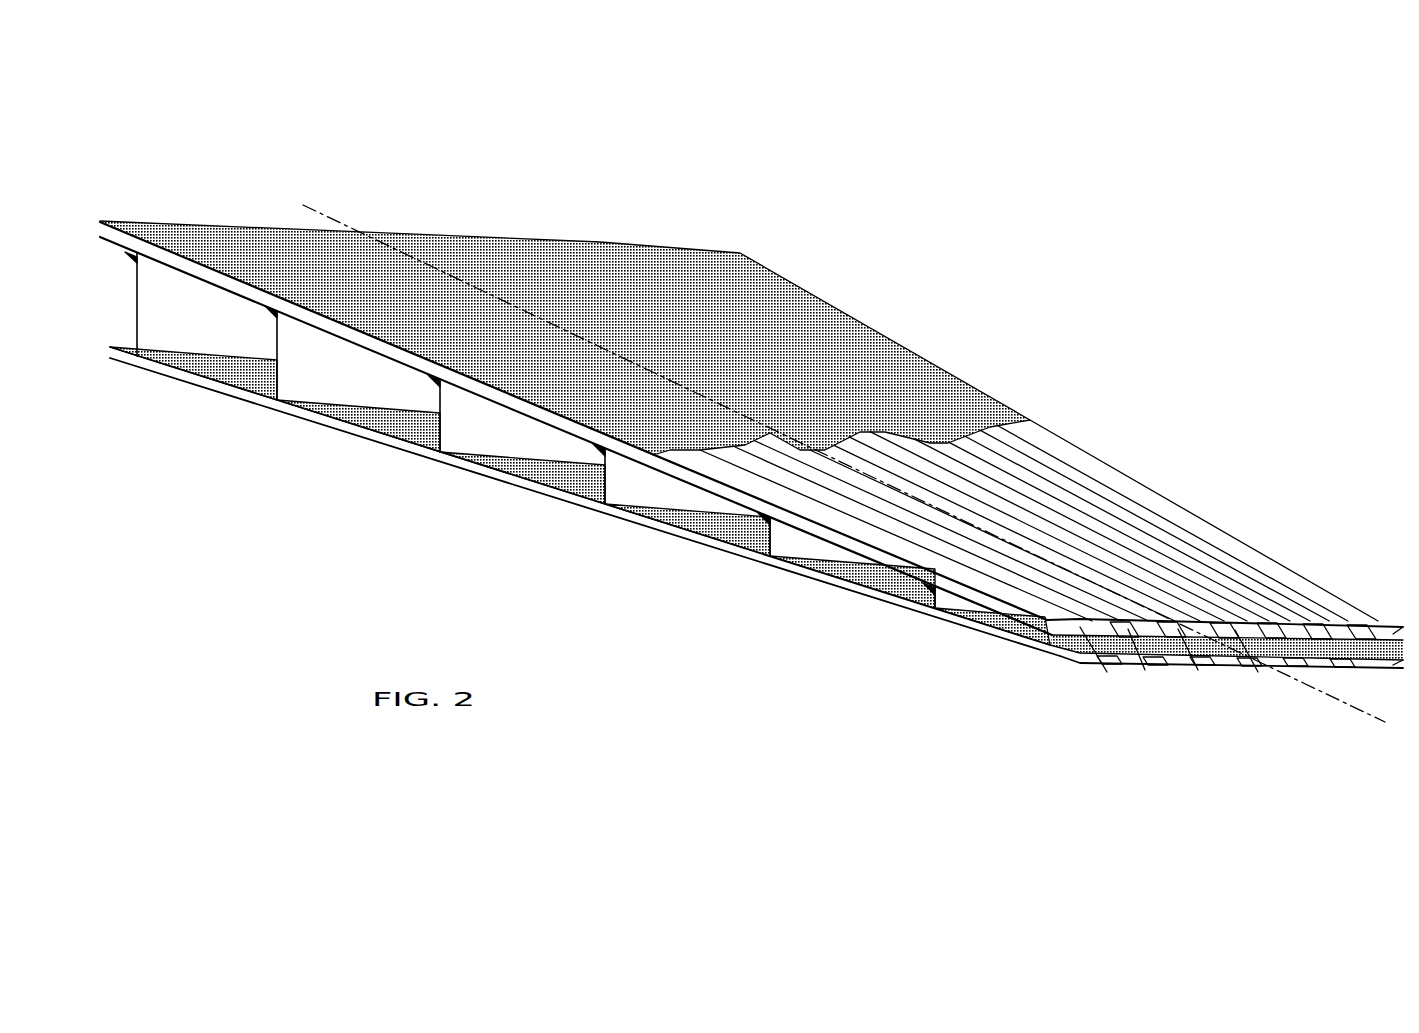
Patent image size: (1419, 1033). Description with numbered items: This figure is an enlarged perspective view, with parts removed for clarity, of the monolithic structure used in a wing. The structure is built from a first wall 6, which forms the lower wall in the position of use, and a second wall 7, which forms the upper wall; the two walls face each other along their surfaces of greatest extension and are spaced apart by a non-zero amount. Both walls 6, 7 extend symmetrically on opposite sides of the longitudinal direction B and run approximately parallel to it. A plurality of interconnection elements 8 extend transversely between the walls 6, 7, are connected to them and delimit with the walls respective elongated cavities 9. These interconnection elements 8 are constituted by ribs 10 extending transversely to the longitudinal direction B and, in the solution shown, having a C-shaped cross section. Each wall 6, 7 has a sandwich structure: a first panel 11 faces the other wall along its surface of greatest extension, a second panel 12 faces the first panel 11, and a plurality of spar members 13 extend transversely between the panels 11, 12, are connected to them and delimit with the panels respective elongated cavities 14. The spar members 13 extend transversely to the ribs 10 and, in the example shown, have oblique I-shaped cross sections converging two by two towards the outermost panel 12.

The first wall 6 is at (573, 512).
The second wall 7 is at (803, 352).
The interconnection elements 8 is at (570, 518).
The elongated cavities 9 is at (240, 312).
The ribs 10 is at (184, 320).
The first panel 11 is at (146, 250).
The second panel 12 is at (162, 236).
The spar members 13 is at (1207, 631).
The elongated cavities 14 is at (1242, 682).
The longitudinal direction B is at (323, 210).